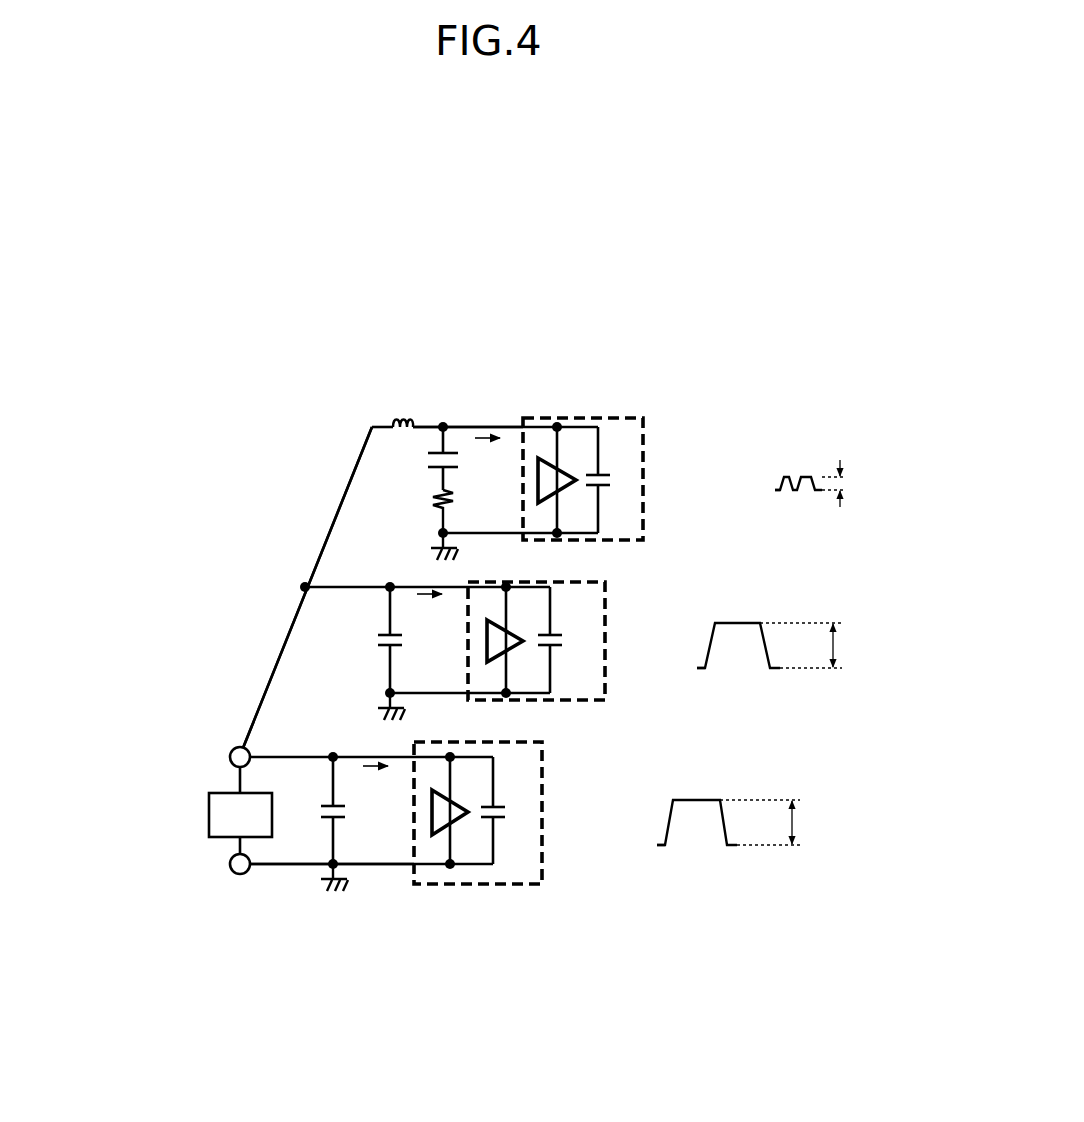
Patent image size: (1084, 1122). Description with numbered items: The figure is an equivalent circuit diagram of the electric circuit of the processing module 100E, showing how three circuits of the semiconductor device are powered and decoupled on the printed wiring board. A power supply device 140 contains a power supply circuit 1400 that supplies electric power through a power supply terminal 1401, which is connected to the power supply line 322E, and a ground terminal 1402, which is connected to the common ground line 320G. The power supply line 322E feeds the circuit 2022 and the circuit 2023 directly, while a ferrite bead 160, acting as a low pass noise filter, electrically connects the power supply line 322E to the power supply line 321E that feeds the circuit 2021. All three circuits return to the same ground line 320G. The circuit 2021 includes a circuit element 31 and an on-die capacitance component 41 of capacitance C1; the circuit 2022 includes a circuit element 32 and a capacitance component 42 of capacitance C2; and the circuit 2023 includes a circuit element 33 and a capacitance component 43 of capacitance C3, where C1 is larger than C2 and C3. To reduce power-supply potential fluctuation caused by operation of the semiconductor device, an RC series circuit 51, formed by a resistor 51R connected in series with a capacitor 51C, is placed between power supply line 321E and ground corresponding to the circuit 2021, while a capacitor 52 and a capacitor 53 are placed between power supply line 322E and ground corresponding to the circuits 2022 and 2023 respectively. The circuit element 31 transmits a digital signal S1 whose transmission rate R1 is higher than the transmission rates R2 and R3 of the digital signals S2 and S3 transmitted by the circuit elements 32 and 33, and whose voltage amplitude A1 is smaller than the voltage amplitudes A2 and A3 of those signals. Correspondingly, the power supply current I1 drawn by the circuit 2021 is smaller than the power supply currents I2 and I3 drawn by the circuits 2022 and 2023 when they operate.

The ultrasonic device 100E is at (546, 306).
The ferrite bead 160 is at (402, 421).
The power supply line 321E is at (472, 425).
The power supply line 322E is at (275, 665).
The ground line 320G is at (307, 866).
The circuit element 31 is at (562, 472).
The circuit element 32 is at (510, 632).
The circuit element 33 is at (458, 805).
The circuit 2021 is at (645, 457).
The circuit 2022 is at (605, 638).
The circuit 2023 is at (543, 786).
The capacitance component 41 is at (613, 478).
The capacitance component 42 is at (562, 642).
The capacitance component 43 is at (505, 810).
The capacitance C1 is at (611, 480).
The capacitance C2 is at (564, 640).
The capacitance C3 is at (506, 810).
The RC series circuit 51 is at (268, 432).
The capacitor 51C is at (440, 461).
The resistor 51R is at (440, 499).
The capacitor 52 is at (378, 640).
The capacitor 53 is at (322, 810).
The power supply device 140 is at (203, 871).
The power supply circuit 1400 is at (209, 817).
The power supply terminal 1401 is at (231, 752).
The ground terminal 1402 is at (231, 860).
The power supply current I1 is at (487, 453).
The power supply current I2 is at (429, 610).
The power supply current I3 is at (375, 784).
The digital signal S1 is at (798, 466).
The digital signal S2 is at (738, 628).
The digital signal S3 is at (697, 805).
The transmission rate R1 is at (758, 500).
The transmission rate R2 is at (700, 685).
The transmission rate R3 is at (653, 859).
The voltage amplitude A1 is at (854, 483).
The voltage amplitude A2 is at (813, 645).
The voltage amplitude A3 is at (773, 822).